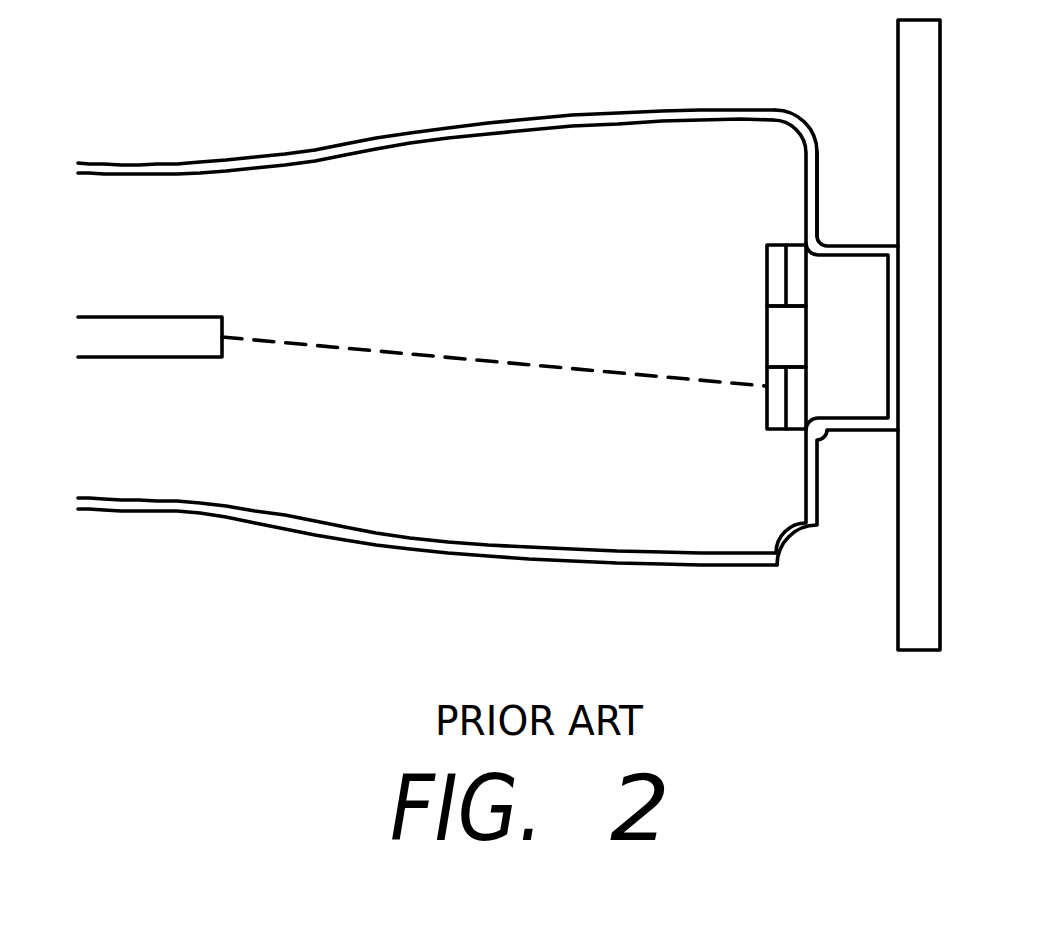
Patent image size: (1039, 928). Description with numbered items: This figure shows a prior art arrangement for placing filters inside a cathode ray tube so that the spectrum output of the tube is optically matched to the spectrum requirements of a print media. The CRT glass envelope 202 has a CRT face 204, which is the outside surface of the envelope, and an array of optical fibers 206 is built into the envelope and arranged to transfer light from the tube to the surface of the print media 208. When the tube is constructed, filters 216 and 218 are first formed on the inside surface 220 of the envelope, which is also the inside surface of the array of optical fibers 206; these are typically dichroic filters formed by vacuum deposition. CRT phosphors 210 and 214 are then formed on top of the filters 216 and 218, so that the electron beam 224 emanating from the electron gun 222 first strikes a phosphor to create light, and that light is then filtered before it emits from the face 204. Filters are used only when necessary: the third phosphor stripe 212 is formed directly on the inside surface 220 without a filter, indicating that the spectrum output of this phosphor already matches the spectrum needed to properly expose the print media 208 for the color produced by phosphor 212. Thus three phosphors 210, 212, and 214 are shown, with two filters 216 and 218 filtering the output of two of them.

The CRT glass envelope 202 is at (557, 123).
The CRT face 204 is at (818, 187).
The array of optical fibers 206 is at (853, 420).
The print media 208 is at (928, 145).
The CRT phosphor 210 is at (778, 280).
The phosphor stripe 212 is at (780, 338).
The CRT phosphor 214 is at (778, 416).
The filter 216 is at (798, 262).
The filter 218 is at (798, 428).
The inside surface 220 is at (805, 522).
The electron gun 222 is at (180, 317).
The electron beam 224 is at (340, 347).